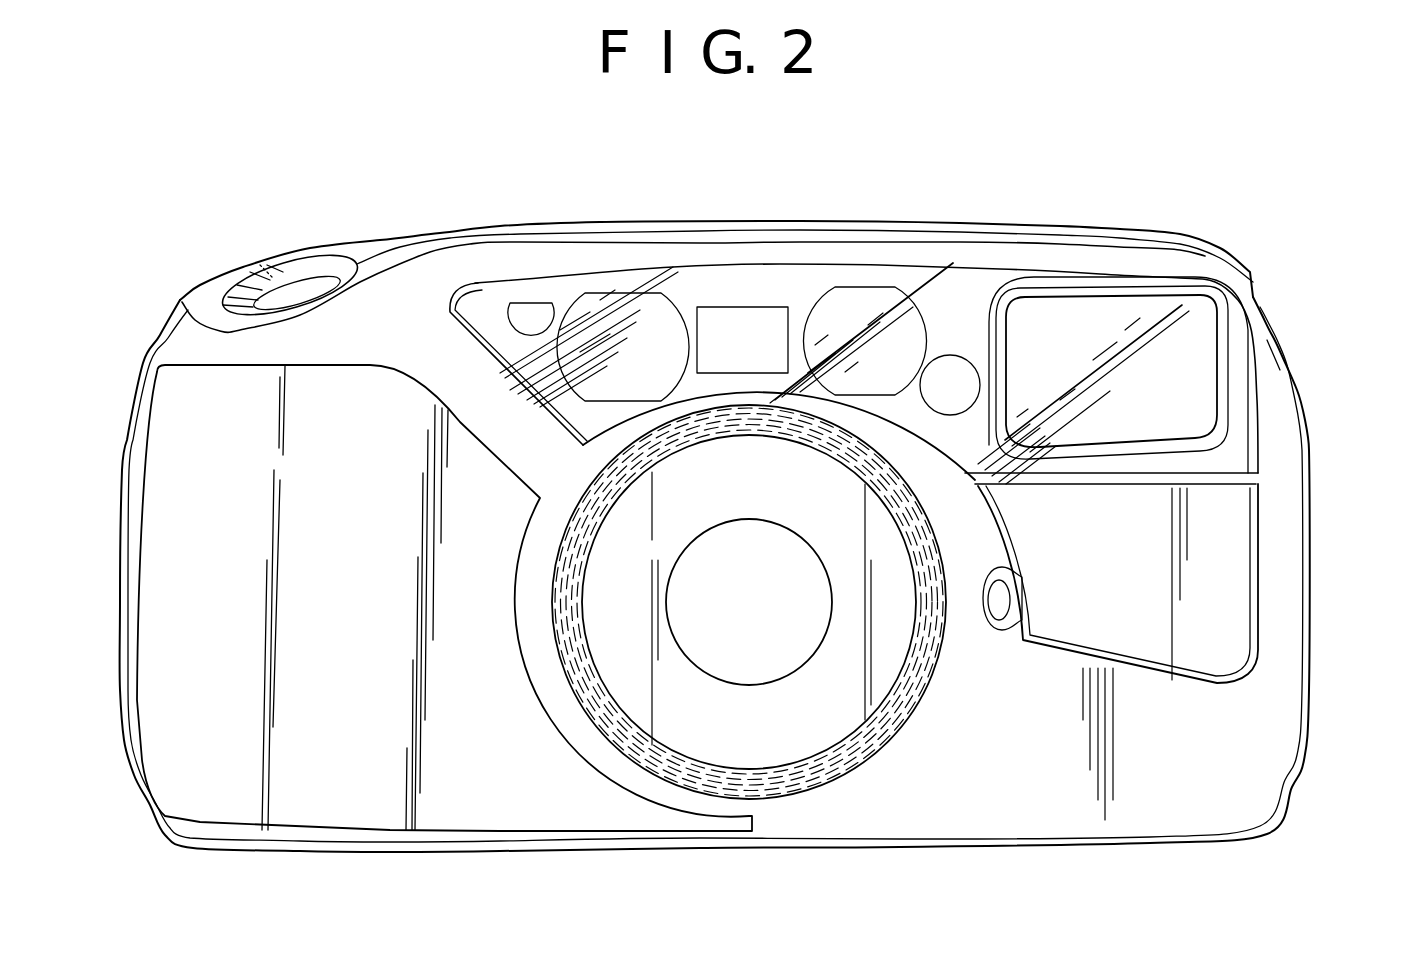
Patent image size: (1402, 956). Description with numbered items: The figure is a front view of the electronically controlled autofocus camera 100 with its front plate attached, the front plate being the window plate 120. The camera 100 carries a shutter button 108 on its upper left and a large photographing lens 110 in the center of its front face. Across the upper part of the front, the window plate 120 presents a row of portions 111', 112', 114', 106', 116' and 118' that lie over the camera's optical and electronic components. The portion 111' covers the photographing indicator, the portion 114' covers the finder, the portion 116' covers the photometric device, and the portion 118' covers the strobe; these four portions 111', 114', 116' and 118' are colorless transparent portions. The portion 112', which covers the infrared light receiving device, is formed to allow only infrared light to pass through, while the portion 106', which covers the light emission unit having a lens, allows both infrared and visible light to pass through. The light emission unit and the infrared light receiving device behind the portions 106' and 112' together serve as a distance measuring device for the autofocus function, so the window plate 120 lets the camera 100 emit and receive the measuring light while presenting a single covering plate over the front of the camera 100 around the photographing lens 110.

The camera 100 is at (236, 250).
The shutter button 108 is at (300, 290).
The photographing lens 110 is at (817, 730).
The portion covering the photographing indicator 111' is at (524, 253).
The portion covering the infrared light receiving device 112' is at (623, 286).
The portion covering the finder 114' is at (742, 272).
The portion covering the light emission unit 106' is at (864, 283).
The portion covering the photometric device 116' is at (962, 293).
The portion covering the strobe 118' is at (1111, 317).
The window plate 120 is at (1243, 465).